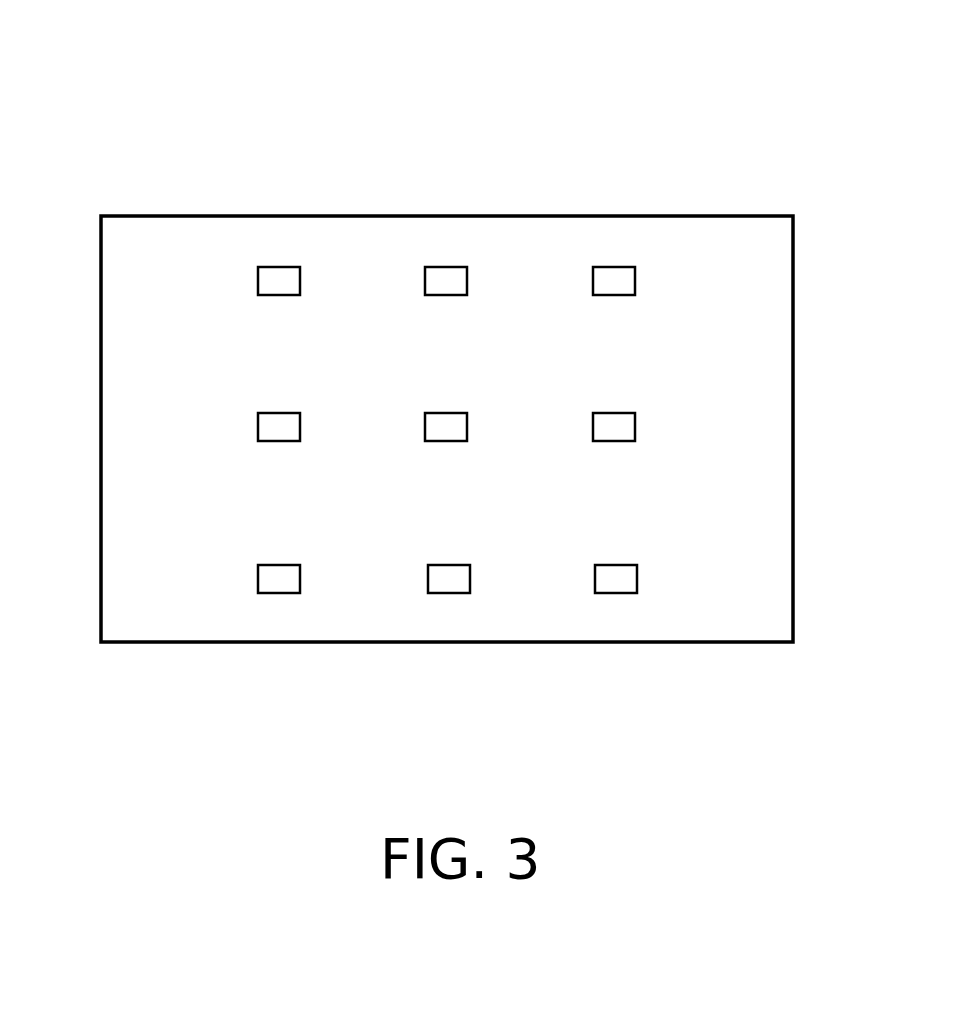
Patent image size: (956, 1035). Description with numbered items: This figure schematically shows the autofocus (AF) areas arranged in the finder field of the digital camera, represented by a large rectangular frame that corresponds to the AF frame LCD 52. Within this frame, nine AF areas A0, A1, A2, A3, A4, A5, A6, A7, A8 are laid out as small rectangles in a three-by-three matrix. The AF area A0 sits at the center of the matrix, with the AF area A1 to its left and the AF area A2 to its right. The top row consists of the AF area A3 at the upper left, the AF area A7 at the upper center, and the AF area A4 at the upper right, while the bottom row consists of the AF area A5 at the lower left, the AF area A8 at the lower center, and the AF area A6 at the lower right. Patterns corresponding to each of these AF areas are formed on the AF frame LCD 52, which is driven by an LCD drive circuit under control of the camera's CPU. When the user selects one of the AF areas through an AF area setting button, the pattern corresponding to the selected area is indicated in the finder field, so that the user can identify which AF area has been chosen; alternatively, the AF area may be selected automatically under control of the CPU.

The AF frame LCD 52 is at (456, 66).
The AF area A0 is at (448, 413).
The AF area A1 is at (258, 429).
The AF area A2 is at (635, 427).
The AF area A3 is at (277, 267).
The AF area A4 is at (614, 267).
The AF area A5 is at (277, 593).
The AF area A6 is at (613, 593).
The AF area A7 is at (443, 267).
The AF area A8 is at (448, 593).